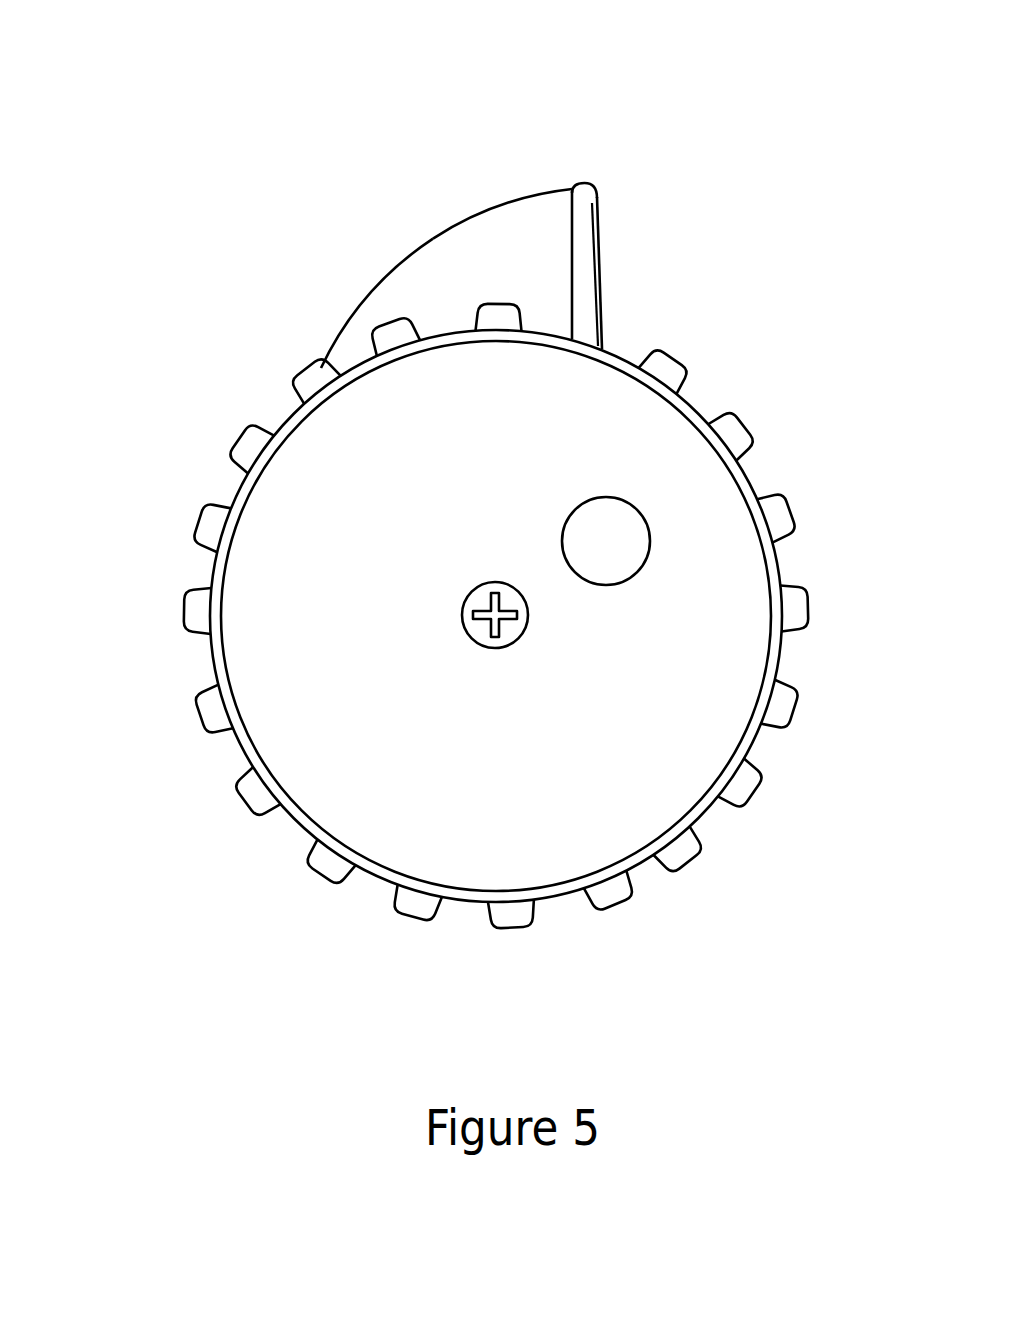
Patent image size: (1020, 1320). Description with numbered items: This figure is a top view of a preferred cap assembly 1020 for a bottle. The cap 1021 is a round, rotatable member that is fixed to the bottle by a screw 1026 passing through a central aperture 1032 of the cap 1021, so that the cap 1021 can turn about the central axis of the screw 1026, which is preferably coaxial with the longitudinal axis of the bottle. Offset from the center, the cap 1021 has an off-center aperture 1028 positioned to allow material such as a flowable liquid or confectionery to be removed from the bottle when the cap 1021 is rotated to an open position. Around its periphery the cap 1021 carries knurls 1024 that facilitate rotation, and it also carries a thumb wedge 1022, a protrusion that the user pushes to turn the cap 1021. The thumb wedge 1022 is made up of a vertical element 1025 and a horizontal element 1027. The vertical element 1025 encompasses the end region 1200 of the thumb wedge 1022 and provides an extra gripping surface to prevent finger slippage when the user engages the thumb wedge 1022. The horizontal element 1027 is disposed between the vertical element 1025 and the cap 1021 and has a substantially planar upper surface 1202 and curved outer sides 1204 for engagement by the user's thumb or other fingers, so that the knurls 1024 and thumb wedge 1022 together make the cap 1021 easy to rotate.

The cap assembly 1020 is at (170, 158).
The cap 1021 is at (403, 783).
The thumb wedge 1022 is at (588, 278).
The knurls 1024 is at (205, 522).
The vertical element 1025 is at (582, 242).
The screw 1026 is at (500, 620).
The horizontal element 1027 is at (465, 257).
The off-center aperture 1028 is at (612, 538).
The central aperture 1032 is at (477, 635).
The end region 1200 is at (600, 257).
The substantially planar upper surface 1202 is at (512, 235).
The curved outer sides 1204 is at (425, 282).